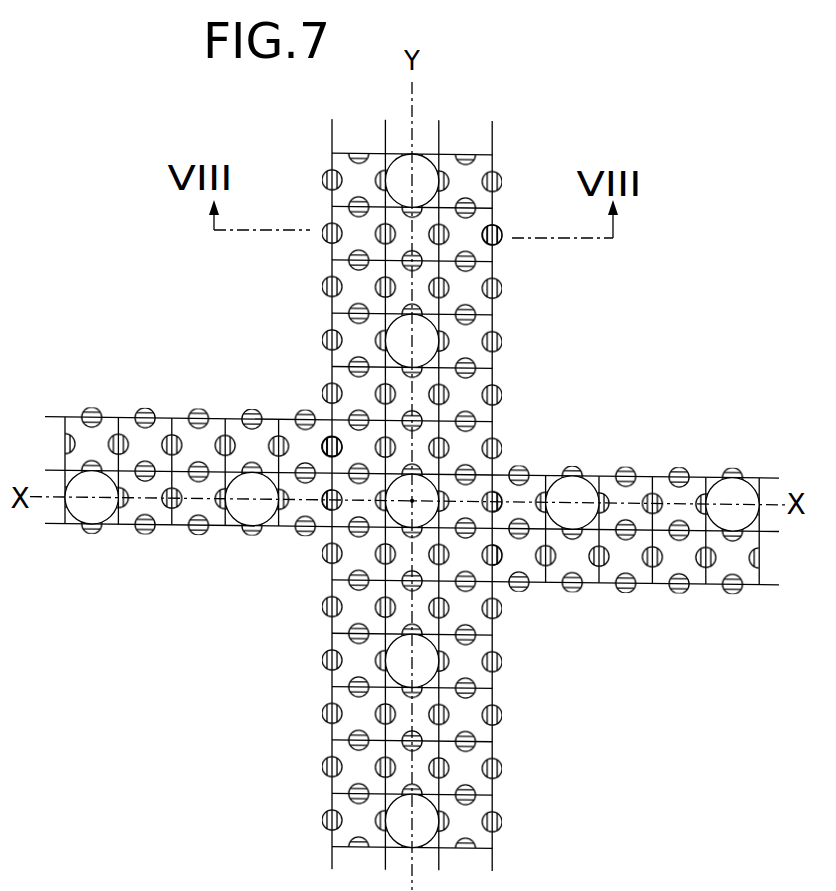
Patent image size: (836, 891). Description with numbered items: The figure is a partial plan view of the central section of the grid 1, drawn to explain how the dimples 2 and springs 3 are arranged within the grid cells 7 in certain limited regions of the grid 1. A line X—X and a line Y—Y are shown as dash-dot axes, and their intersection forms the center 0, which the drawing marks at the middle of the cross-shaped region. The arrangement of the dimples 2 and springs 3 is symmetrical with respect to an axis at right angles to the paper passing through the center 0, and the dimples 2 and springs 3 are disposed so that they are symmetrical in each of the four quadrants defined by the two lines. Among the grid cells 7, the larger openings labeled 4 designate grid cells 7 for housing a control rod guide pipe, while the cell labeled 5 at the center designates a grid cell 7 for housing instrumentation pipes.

The grid 1 is at (407, 486).
The dimples 2 is at (412, 500).
The springs 3 is at (412, 340).
The grid cells for housing control rod guide pipe 4 is at (412, 500).
The grid cell for housing instrumentation pipes 5 is at (411, 501).
The grid cells 7 is at (412, 495).
The center 0 is at (413, 503).